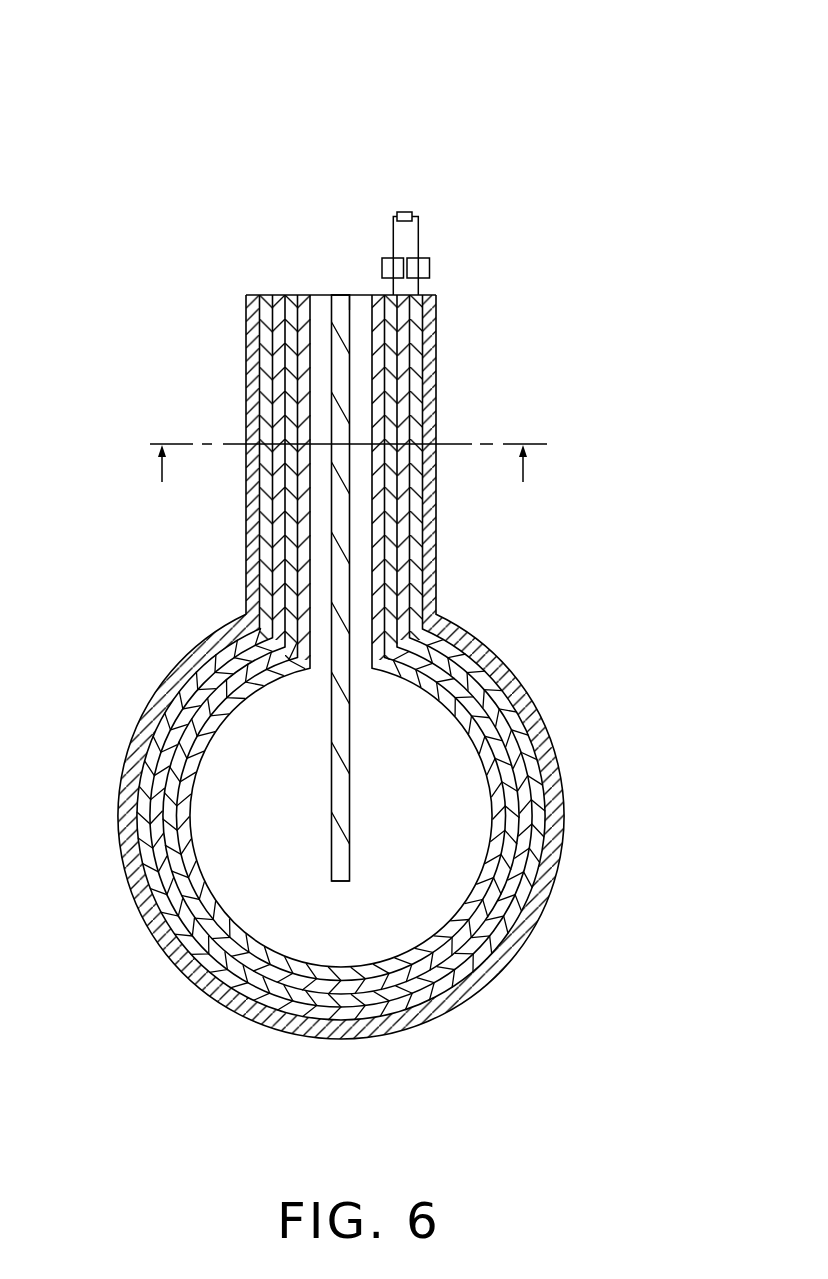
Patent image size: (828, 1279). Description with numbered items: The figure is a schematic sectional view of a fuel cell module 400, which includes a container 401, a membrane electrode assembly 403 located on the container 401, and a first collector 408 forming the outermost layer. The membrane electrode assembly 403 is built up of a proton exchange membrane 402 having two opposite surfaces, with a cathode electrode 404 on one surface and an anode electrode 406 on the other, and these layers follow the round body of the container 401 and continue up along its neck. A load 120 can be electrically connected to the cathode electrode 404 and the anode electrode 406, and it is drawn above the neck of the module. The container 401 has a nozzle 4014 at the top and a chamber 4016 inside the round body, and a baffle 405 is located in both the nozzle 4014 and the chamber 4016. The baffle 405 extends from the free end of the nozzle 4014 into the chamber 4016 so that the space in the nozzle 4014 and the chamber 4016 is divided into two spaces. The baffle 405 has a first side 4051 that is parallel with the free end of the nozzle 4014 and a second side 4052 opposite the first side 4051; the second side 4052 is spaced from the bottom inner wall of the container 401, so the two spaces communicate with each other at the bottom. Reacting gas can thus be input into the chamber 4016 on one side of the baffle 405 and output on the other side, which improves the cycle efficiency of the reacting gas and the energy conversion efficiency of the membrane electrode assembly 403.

The fuel cell module 400 is at (259, 64).
The load 120 is at (403, 212).
The first side 4051 is at (345, 295).
The nozzle 4014 is at (380, 353).
The baffle 405 is at (340, 580).
The chamber 4016 is at (280, 725).
The first collector 408 is at (493, 663).
The anode electrode 406 is at (525, 733).
The proton exchange membrane 402 is at (520, 777).
The cathode electrode 404 is at (512, 825).
The membrane electrode assembly 403 is at (642, 682).
The container 401 is at (493, 861).
The second side 4052 is at (340, 881).